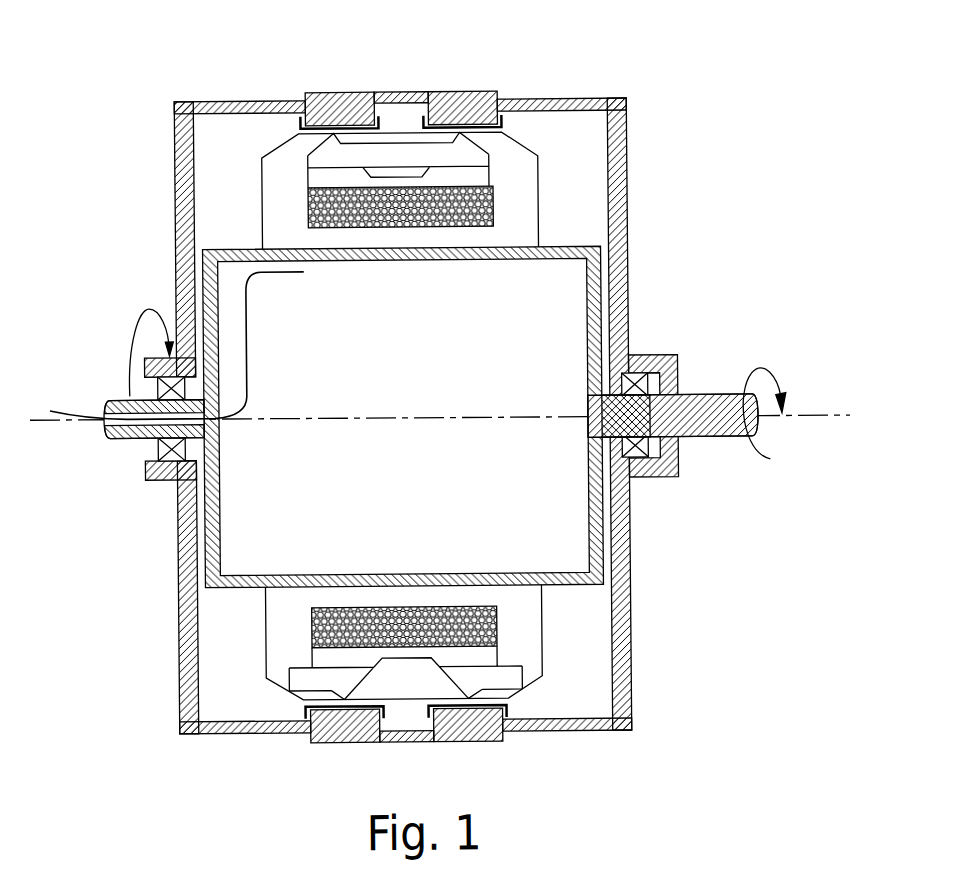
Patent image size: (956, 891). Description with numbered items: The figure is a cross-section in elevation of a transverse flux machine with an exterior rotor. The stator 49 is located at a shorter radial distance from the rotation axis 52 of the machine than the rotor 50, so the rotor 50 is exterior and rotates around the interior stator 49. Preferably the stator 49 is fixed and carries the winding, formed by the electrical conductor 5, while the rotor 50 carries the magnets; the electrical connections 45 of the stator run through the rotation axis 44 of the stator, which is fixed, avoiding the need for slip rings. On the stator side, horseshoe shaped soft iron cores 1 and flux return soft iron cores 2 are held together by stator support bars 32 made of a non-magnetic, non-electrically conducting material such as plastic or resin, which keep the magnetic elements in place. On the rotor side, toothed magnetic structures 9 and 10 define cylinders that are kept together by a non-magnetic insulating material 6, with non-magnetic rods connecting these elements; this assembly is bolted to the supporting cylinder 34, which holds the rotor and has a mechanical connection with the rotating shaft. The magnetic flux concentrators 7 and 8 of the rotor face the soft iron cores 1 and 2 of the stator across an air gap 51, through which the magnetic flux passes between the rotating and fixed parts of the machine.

The horseshoe shaped soft iron core 1 is at (530, 188).
The flux return soft iron core 2 is at (401, 137).
The electrical conductor 5 is at (310, 187).
The non-magnetic insulating material 6 is at (418, 93).
The magnetic flux concentrator 7 is at (533, 103).
The magnetic flux concentrator 8 is at (303, 115).
The toothed magnetic structure 9 is at (488, 94).
The toothed magnetic structure 10 is at (309, 93).
The stator support bar 32 is at (491, 153).
The supporting cylinder 34 is at (178, 220).
The rotation axis of the stator 44 is at (722, 397).
The electrical connections 45 is at (244, 338).
The stator 49 is at (562, 497).
The rotor 50 is at (619, 207).
The air gap 51 is at (299, 705).
The rotation axis 52 is at (813, 424).